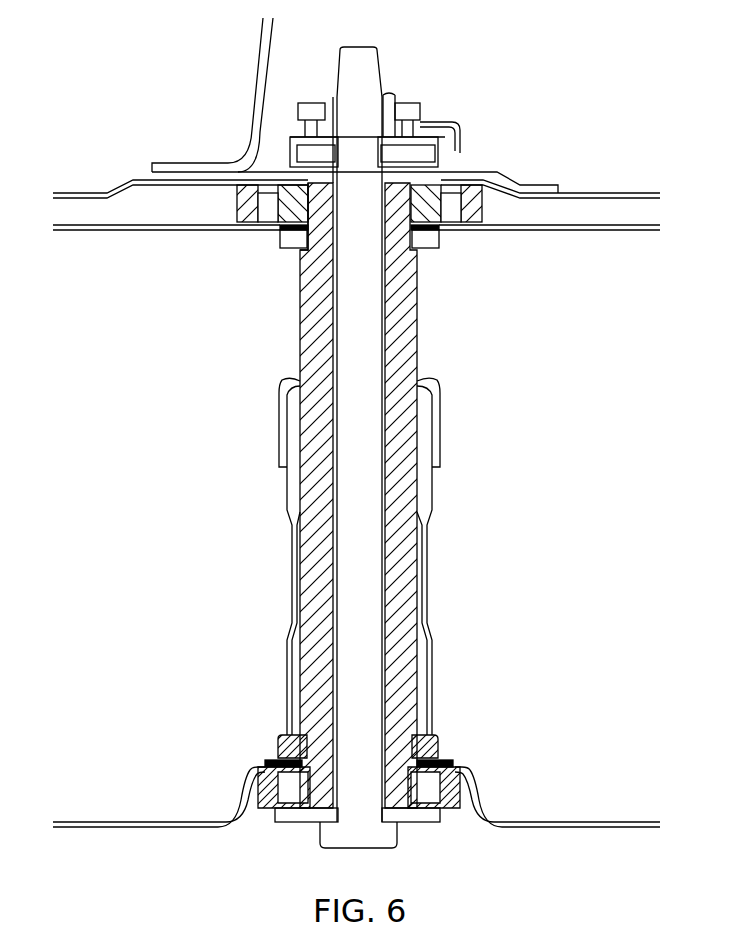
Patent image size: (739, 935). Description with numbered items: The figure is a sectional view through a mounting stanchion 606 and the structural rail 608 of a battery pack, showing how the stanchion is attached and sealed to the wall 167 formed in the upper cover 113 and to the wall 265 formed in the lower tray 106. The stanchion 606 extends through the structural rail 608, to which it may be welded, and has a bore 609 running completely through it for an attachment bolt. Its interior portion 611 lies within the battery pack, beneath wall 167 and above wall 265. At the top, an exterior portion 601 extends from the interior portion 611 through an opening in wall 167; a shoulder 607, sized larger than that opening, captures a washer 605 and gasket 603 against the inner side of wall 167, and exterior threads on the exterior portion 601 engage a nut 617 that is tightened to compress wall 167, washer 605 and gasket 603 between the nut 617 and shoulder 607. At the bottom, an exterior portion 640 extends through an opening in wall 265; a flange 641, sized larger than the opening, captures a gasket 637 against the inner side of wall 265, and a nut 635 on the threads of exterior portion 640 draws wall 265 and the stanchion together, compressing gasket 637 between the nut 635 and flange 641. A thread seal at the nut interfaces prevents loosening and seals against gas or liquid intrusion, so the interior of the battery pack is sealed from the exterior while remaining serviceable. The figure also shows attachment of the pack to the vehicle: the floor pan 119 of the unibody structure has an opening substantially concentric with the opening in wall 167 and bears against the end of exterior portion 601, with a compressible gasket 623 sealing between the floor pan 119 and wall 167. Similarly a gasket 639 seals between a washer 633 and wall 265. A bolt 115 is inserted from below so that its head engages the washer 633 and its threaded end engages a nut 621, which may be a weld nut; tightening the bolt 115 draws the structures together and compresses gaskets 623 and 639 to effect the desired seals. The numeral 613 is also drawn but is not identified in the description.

The lower tray 106 is at (110, 738).
The upper cover 113 is at (102, 268).
The bolt 115 is at (375, 50).
The floor pan 119 is at (570, 193).
The wall 167 is at (196, 232).
The wall 265 is at (230, 800).
The exterior portion 601 is at (445, 160).
The gasket 603 is at (257, 228).
The washer 605 is at (426, 250).
The stanchion 606 is at (303, 352).
The shoulder 607 is at (288, 260).
The structural rail 608 is at (278, 428).
The bore 609 is at (385, 330).
The interior portion 611 is at (440, 357).
The nut 613 is at (338, 98).
The nut 617 is at (473, 188).
The nut 621 is at (393, 98).
The gasket 623 is at (457, 187).
The washer 633 is at (297, 822).
The nut 635 is at (477, 763).
The gasket 637 is at (445, 740).
The gasket 639 is at (265, 762).
The exterior portion 640 is at (322, 790).
The flange 641 is at (290, 735).